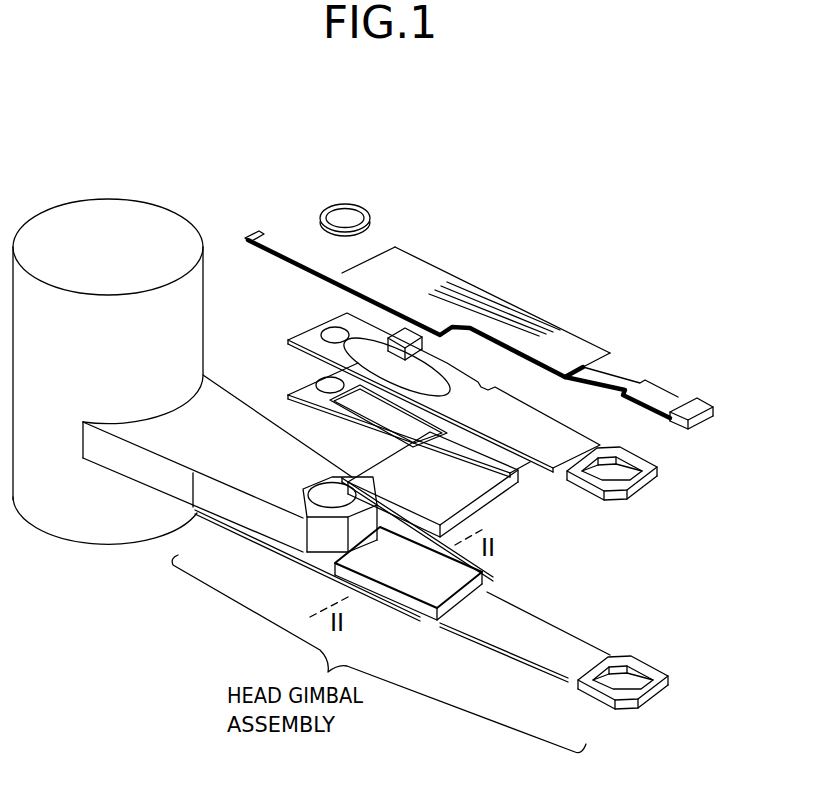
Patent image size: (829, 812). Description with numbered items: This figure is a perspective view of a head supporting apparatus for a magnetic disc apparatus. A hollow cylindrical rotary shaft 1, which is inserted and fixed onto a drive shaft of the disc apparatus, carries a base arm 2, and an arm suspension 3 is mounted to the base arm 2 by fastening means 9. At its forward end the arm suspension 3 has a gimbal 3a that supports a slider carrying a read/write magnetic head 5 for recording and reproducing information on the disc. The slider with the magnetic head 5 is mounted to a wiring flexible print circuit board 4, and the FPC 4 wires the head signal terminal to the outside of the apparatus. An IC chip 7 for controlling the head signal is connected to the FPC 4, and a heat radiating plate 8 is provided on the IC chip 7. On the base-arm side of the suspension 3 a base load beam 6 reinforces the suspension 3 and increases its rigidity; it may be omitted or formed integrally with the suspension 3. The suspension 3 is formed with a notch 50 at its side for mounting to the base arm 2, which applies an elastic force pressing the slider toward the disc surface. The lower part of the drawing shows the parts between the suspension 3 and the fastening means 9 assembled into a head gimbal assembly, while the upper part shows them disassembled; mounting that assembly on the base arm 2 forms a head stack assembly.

The rotary shaft 1 is at (123, 222).
The base arm 2 is at (131, 465).
The arm suspension 3 is at (528, 437).
The gimbal 3a is at (647, 472).
The wiring flexible print circuit board 4 is at (575, 350).
The magnetic head 5 is at (697, 398).
The base load beam 6 is at (303, 392).
The IC chip 7 is at (407, 330).
The heat radiating plate 8 is at (478, 492).
The fastening means 9 is at (363, 207).
The notch 50 is at (440, 337).